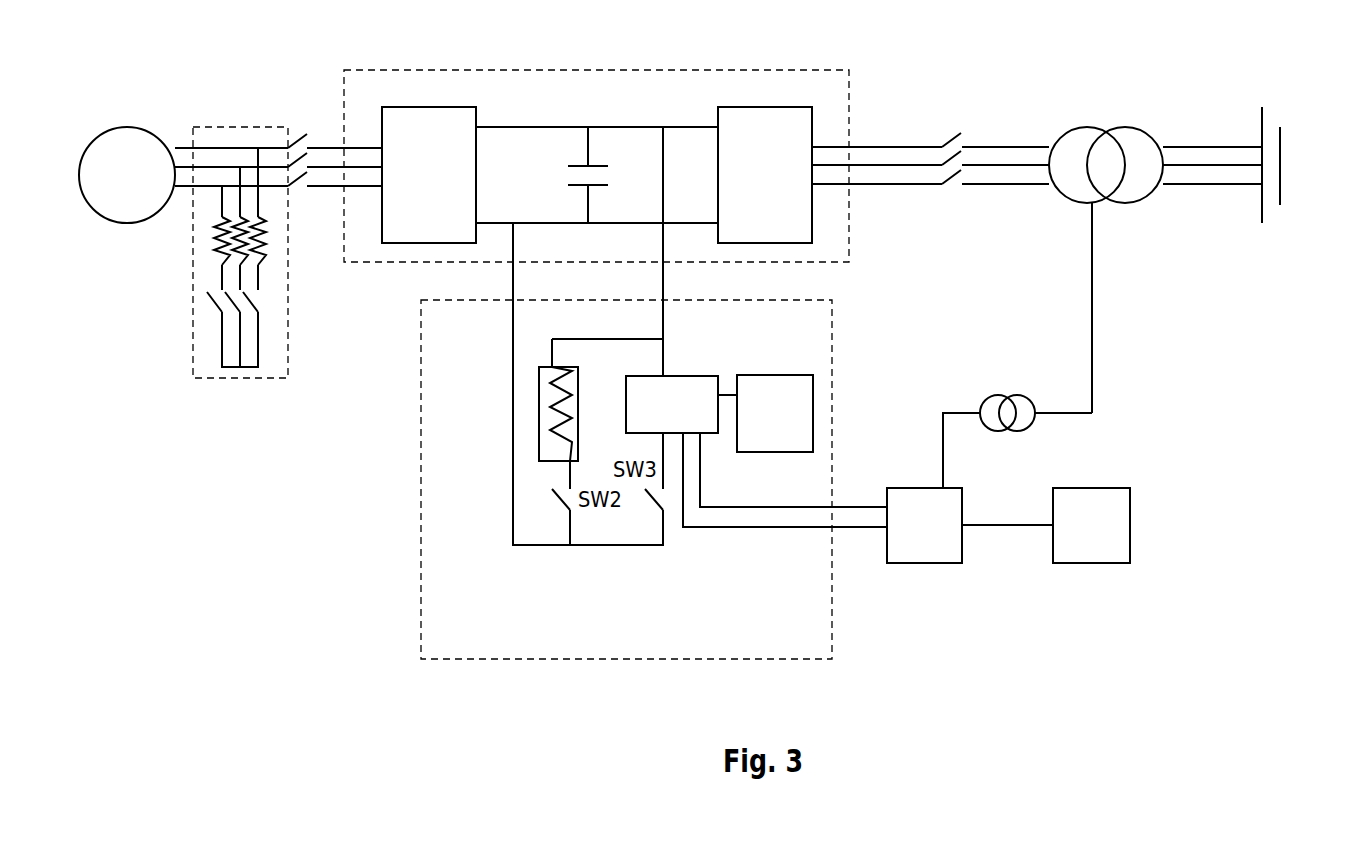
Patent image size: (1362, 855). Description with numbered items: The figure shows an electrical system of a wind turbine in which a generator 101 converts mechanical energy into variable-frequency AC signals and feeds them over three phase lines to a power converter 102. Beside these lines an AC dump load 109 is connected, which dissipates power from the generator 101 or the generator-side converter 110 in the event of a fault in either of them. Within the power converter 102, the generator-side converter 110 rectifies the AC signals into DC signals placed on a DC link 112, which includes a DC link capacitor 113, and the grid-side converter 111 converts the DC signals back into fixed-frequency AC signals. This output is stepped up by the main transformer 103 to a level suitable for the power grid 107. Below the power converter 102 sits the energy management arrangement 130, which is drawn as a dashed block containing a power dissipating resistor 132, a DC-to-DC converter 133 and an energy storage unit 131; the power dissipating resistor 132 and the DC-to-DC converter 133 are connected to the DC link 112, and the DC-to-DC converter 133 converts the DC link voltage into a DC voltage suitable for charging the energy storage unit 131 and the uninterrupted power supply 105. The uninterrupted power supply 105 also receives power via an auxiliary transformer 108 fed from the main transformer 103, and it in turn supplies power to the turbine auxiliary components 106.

The generator 101 is at (117, 127).
The AC dump load 109 is at (249, 127).
The power converter 102 is at (850, 105).
The generator-side converter 110 is at (429, 175).
The grid-side converter 111 is at (765, 175).
The DC link 112 is at (497, 126).
The DC link capacitor 113 is at (585, 203).
The main transformer 103 is at (1117, 127).
The power grid 107 is at (1283, 147).
The energy management arrangement 130 is at (420, 432).
The power dissipating resistor 132 is at (578, 415).
The DC-to-DC converter 133 is at (672, 404).
The energy storage unit 131 is at (775, 413).
The auxiliary transformer 108 is at (1002, 395).
The uninterrupted power supply (UPS) 105 is at (915, 563).
The turbine auxiliary components 106 is at (1091, 525).